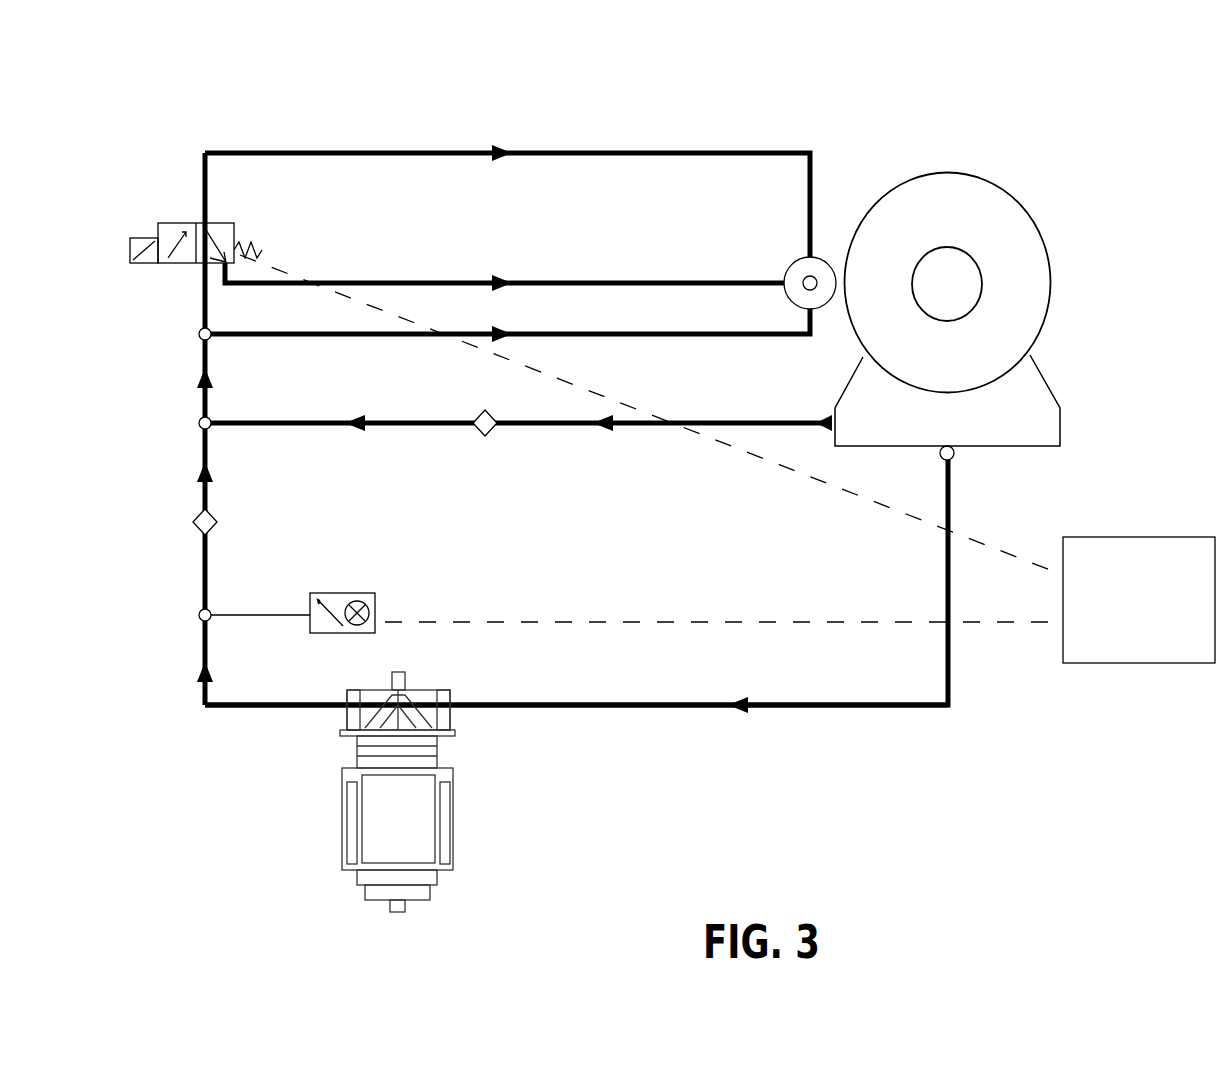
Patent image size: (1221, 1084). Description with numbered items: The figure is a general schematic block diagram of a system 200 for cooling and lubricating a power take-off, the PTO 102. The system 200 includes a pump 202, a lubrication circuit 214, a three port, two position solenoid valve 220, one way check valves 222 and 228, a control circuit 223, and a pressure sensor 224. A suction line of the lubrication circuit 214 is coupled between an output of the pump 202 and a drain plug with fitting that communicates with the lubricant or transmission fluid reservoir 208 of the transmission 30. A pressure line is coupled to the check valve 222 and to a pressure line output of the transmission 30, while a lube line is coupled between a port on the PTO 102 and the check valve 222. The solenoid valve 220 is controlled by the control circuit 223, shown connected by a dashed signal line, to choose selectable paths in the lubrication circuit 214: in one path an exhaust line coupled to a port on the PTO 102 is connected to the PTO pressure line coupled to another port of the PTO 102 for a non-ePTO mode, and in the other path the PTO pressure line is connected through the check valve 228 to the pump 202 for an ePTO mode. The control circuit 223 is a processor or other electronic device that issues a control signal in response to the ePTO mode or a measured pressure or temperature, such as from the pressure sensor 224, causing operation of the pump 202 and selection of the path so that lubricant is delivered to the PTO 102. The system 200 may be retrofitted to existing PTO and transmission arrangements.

The system 200 is at (446, 107).
The valve 220 is at (190, 216).
The PTO 102 is at (823, 256).
The transmission 30 is at (1041, 234).
The lubricant or transmission fluid reservoir 208 is at (947, 400).
The valve 222 is at (478, 416).
The valve 228 is at (194, 513).
The control circuit 223 is at (1139, 600).
The pressure sensor 224 is at (385, 632).
The pump 202 is at (457, 845).
The lubrication circuit 214 is at (800, 732).